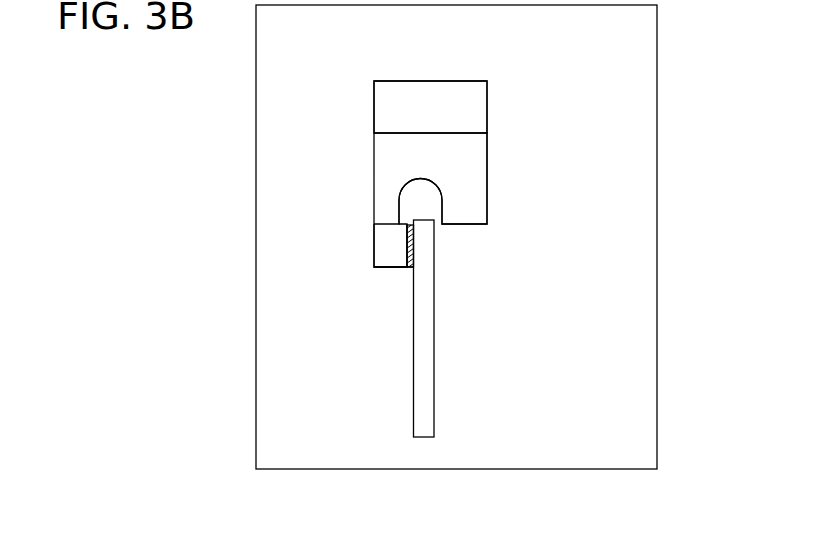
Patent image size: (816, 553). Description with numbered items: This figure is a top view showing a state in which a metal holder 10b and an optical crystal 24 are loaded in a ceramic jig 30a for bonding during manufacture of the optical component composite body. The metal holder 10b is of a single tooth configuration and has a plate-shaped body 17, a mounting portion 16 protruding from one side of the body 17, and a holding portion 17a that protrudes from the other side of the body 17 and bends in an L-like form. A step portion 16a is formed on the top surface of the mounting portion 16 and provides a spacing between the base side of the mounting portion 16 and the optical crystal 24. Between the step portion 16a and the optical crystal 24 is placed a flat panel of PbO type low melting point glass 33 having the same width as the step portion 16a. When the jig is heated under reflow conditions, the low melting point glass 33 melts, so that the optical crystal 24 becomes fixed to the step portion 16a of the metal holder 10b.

The metal holder 10b is at (441, 74).
The ceramic jig 30a is at (651, 68).
The holding portion 17a is at (386, 108).
The body 17 is at (386, 158).
The mounting portion 16 is at (386, 243).
The step portion 16a is at (395, 263).
The PbO type low melting point glass 33 is at (412, 243).
The optical crystal 24 is at (430, 428).